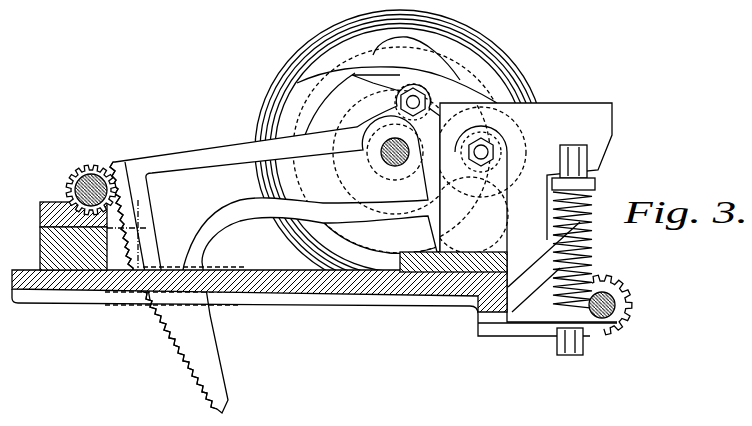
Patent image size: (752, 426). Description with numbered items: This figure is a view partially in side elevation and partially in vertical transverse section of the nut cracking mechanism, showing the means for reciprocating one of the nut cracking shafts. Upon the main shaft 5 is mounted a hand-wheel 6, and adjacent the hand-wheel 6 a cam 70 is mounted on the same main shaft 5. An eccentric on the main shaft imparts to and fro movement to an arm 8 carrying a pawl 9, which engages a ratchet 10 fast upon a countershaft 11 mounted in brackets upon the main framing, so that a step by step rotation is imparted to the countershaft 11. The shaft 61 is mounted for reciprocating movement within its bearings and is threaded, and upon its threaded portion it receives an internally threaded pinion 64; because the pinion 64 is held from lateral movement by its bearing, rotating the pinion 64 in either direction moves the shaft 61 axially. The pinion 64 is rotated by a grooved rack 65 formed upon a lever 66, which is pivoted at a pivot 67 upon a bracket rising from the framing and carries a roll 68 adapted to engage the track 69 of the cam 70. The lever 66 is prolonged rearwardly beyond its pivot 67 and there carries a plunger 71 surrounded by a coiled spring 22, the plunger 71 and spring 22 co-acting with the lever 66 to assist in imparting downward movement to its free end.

The main shaft 5 is at (380, 157).
The hand-wheel 6 is at (394, 150).
The arm 8 is at (571, 240).
The pawl 9 is at (532, 273).
The ratchet 10 is at (618, 290).
The countershaft 11 is at (616, 305).
The spring 22 is at (585, 240).
The shaft 61 is at (84, 190).
The pinion 64 is at (77, 173).
The grooved rack 65 is at (165, 338).
The lever 66 is at (272, 248).
The pivot 67 is at (489, 152).
The roll 68 is at (398, 102).
The track 69 is at (357, 83).
The cam 70 is at (333, 113).
The plunger 71 is at (580, 172).